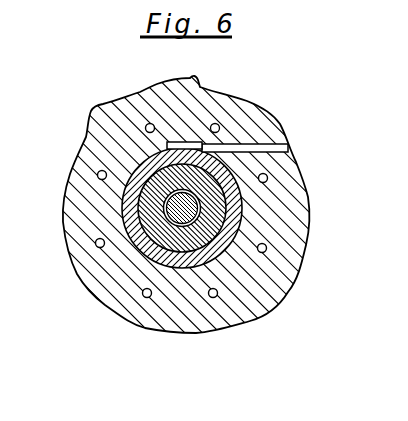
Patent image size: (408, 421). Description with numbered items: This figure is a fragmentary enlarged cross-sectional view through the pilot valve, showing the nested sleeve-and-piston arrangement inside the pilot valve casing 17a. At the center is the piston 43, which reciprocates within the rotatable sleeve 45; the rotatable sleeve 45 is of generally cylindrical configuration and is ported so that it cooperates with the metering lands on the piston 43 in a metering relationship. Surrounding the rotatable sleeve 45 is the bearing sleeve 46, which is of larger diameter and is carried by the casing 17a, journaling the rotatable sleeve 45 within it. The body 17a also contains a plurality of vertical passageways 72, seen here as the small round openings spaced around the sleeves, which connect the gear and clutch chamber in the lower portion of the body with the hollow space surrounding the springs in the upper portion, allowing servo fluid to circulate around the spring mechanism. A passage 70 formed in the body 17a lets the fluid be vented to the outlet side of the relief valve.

The pilot valve casing 17a is at (288, 208).
The piston 43 is at (153, 209).
The rotatable sleeve 45 is at (165, 265).
The bearing sleeve 46 is at (172, 243).
The passage 70 is at (262, 147).
The vertical passageways 72 is at (218, 124).